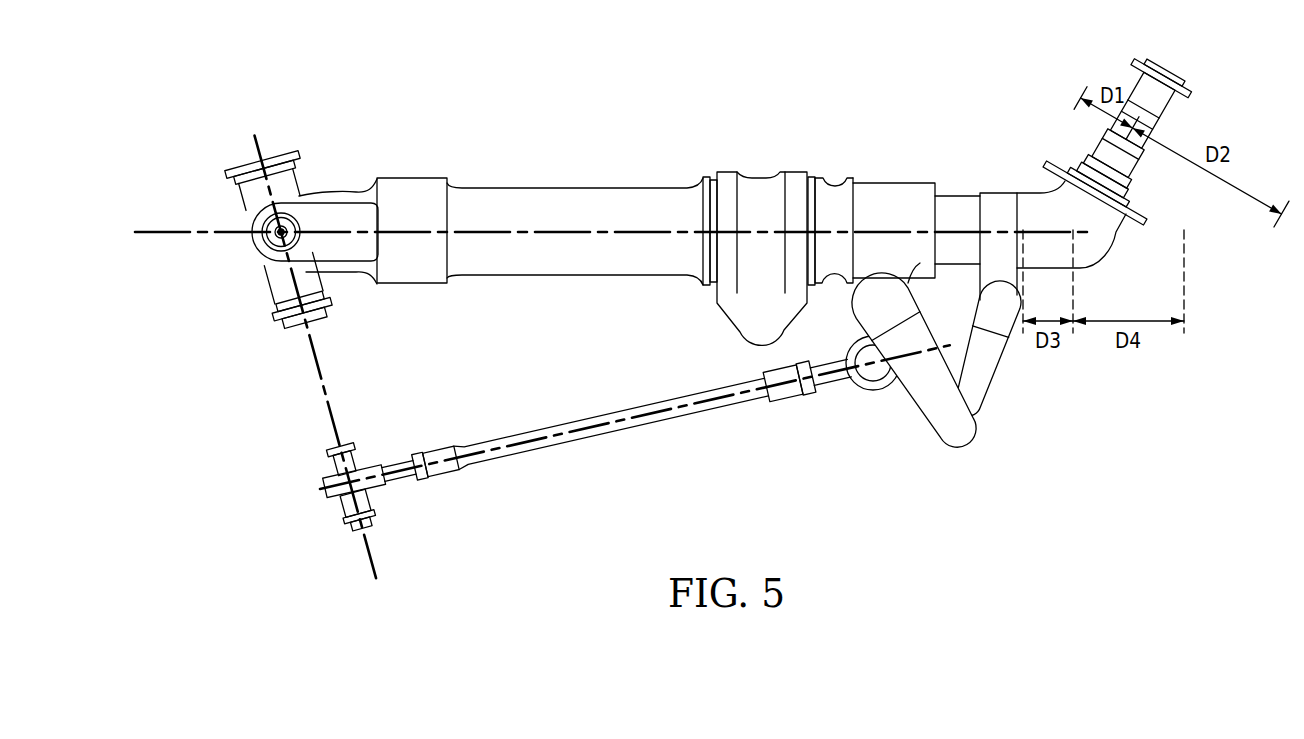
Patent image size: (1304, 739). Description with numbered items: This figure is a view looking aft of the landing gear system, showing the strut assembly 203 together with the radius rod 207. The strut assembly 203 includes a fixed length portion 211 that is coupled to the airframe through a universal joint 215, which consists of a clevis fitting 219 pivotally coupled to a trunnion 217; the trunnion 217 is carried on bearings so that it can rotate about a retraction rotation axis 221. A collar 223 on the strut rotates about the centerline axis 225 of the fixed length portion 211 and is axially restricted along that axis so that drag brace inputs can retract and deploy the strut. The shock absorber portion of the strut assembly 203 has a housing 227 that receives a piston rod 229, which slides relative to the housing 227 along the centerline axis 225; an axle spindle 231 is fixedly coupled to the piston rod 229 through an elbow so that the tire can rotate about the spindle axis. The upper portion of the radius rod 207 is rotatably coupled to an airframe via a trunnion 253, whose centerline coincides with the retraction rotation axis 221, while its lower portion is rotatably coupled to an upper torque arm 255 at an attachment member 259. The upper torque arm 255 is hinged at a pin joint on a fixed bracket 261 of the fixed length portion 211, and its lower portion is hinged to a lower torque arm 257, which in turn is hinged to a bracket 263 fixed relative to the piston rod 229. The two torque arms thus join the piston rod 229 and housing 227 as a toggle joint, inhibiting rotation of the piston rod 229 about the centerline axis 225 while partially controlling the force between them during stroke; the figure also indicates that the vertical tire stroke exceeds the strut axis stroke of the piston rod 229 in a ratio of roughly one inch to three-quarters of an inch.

The strut assembly 203 is at (658, 133).
The radius rod 207 is at (620, 432).
The fixed length portion 211 is at (518, 187).
The universal joint 215 is at (218, 130).
The trunnion 217 is at (268, 273).
The clevis fitting 219 is at (347, 192).
The retraction rotation axis 221 is at (325, 392).
The collar 223 is at (760, 177).
The centerline axis 225 is at (613, 230).
The housing 227 is at (835, 185).
The piston rod 229 is at (948, 195).
The axle spindle 231 is at (1133, 168).
The trunnion 253 is at (340, 510).
The upper torque arm 255 is at (960, 443).
The lower torque arm 257 is at (990, 376).
The attachment member 259 is at (870, 389).
The fixed bracket 261 is at (893, 182).
The bracket 263 is at (1007, 190).